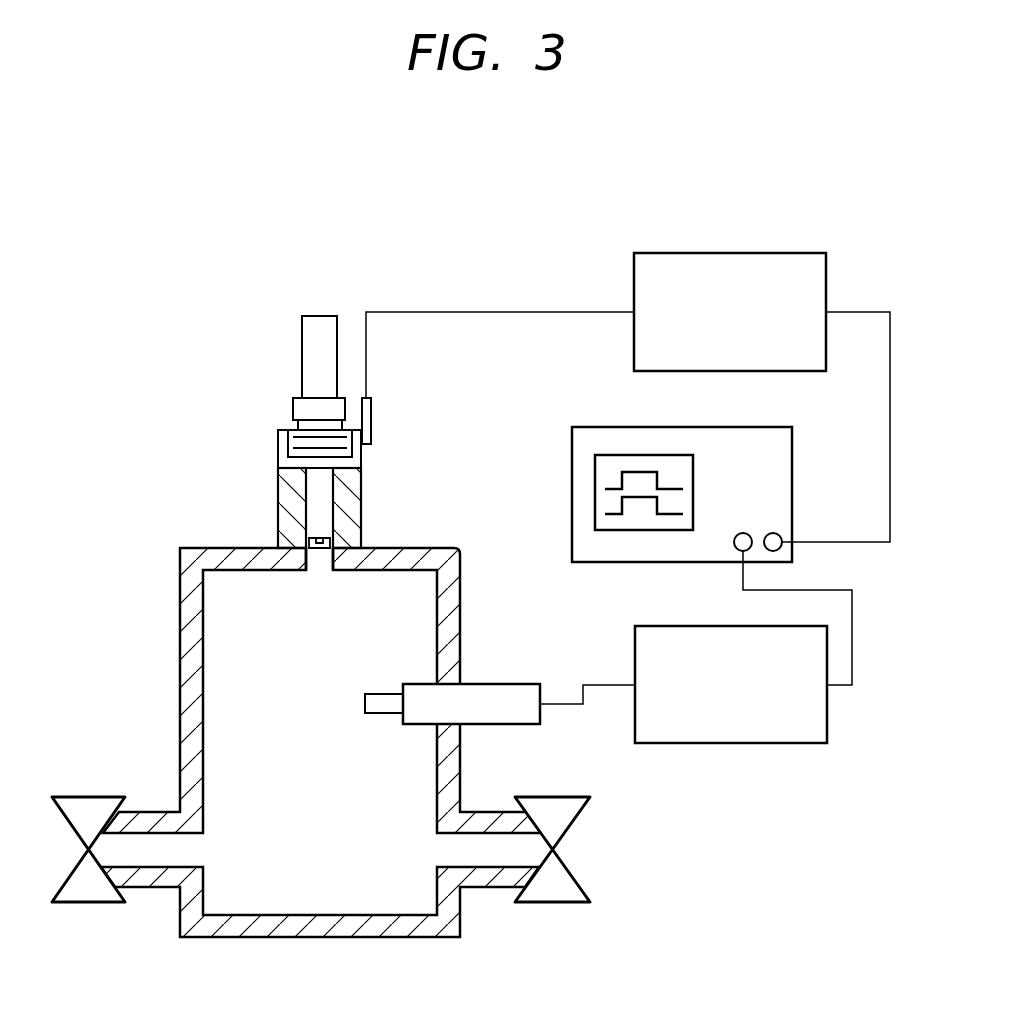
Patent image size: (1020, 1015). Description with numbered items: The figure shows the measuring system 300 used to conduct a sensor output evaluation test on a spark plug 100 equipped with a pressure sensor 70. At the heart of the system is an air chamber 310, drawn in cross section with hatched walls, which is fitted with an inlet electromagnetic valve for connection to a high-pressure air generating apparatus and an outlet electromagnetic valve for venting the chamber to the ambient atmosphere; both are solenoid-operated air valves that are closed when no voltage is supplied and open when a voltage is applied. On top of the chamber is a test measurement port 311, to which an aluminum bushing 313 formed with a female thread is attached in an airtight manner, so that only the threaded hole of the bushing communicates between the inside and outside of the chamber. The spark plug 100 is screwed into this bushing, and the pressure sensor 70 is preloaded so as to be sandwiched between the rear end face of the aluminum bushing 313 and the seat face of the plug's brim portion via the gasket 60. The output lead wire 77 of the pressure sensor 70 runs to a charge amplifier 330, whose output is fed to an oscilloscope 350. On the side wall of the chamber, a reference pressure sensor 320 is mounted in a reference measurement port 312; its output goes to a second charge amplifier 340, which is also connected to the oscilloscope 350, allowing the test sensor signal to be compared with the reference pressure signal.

The measuring system 300 is at (230, 182).
The spark plug 100 is at (264, 380).
The gasket 60 is at (273, 428).
The pressure sensor 70 is at (283, 462).
The output lead wire 77 is at (385, 310).
The air chamber 310 is at (218, 748).
The test measurement port 311 is at (313, 572).
The reference measurement port 312 is at (450, 685).
The aluminum bushing 313 is at (345, 488).
The reference pressure sensor 320 is at (518, 724).
The charge amplifier 330 is at (826, 266).
The charge amplifier 340 is at (784, 744).
The oscilloscope 350 is at (792, 445).